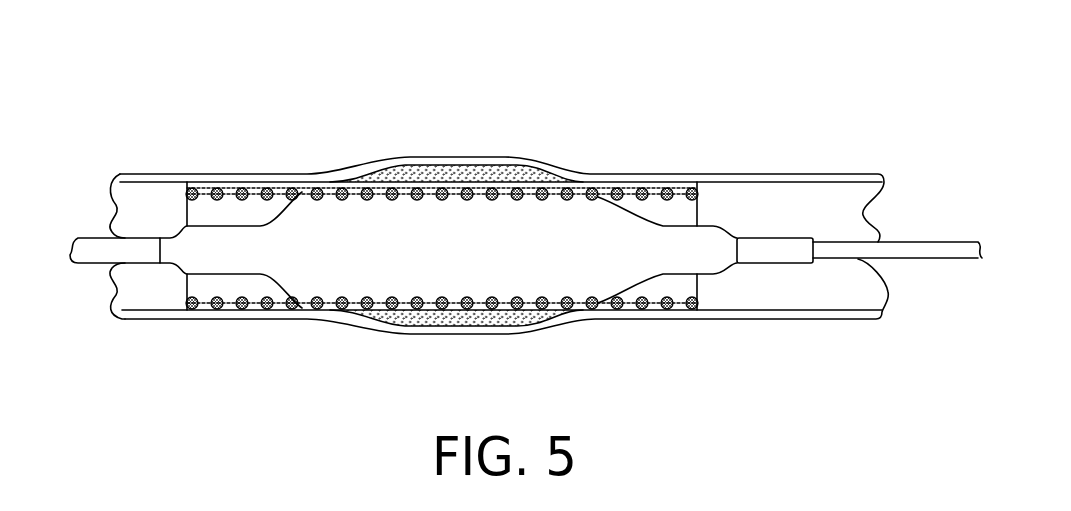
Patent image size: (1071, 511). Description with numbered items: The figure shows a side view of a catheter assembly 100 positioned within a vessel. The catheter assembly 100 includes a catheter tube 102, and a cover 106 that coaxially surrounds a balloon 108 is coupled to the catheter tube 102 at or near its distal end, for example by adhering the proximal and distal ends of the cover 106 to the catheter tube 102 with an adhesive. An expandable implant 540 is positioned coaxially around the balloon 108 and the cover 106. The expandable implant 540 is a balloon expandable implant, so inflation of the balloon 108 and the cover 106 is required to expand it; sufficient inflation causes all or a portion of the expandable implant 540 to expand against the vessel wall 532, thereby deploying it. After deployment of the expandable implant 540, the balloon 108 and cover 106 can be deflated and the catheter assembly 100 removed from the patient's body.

The catheter assembly 100 is at (895, 100).
The catheter tube 102 is at (912, 242).
The cover 106 is at (631, 288).
The balloon 108 is at (722, 230).
The vessel wall 532 is at (273, 174).
The expandable implant 540 is at (587, 175).